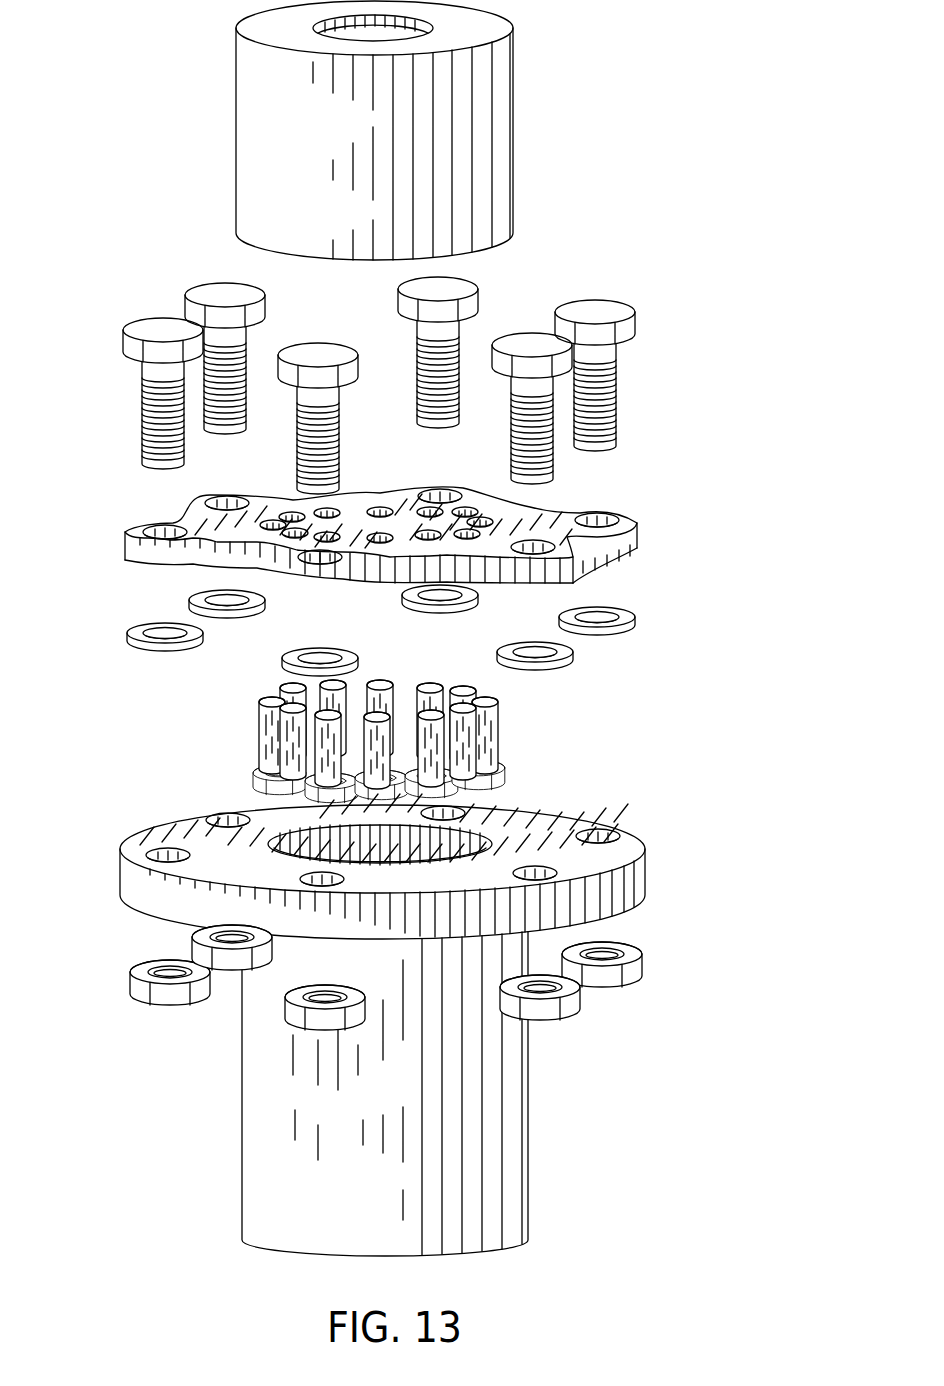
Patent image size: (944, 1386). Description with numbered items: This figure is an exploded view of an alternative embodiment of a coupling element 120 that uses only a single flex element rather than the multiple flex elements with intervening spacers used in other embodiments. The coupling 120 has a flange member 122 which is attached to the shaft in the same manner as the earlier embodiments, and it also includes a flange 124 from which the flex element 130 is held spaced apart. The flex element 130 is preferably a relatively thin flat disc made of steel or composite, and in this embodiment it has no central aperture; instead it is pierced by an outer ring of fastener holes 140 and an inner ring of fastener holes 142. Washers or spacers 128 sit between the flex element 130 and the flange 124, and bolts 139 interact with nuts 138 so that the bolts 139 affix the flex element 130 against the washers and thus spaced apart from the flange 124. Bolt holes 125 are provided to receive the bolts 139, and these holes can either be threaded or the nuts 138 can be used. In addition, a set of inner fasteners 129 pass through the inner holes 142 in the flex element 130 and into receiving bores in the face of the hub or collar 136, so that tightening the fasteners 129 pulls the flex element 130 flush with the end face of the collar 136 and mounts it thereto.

The coupling element 120 is at (632, 228).
The flange member 122 is at (544, 1150).
The flange 124 is at (423, 849).
The bolt holes 125 is at (598, 832).
The washers or spacers 128 is at (637, 607).
The inner fasteners 129 is at (493, 720).
The flex element 130 is at (384, 510).
The hub or collar 136 is at (498, 103).
The nuts 138 is at (628, 962).
The bolts 139 is at (605, 387).
The outer ring of fastener holes 140 is at (155, 530).
The inner ring of fastener holes 142 is at (376, 506).